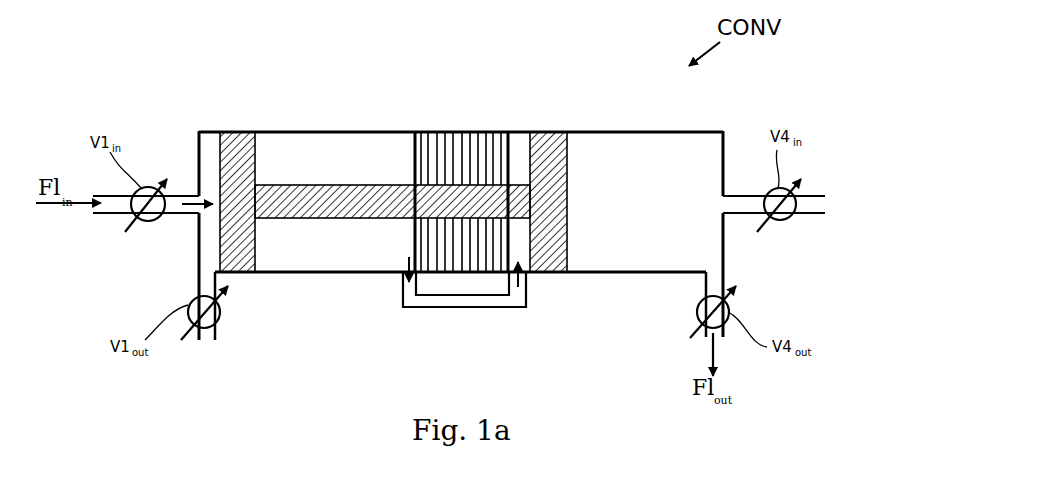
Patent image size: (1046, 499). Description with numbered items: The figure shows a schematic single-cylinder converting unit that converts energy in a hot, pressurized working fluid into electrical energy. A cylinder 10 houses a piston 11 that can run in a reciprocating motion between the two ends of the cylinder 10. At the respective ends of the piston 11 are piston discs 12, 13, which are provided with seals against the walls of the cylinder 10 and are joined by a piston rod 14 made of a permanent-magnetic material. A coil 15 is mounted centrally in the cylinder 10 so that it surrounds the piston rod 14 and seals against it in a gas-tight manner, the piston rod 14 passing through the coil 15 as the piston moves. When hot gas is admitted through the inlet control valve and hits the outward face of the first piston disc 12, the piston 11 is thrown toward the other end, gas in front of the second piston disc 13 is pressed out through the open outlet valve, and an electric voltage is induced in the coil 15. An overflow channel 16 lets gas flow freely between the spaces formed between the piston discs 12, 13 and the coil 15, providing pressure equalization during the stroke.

The cylinder 10 is at (325, 132).
The piston 11 is at (341, 247).
The first piston disc 12 is at (222, 145).
The second piston disc 13 is at (567, 147).
The piston rod 14 is at (393, 220).
The coil 15 is at (415, 148).
The overflow channel 16 is at (455, 307).